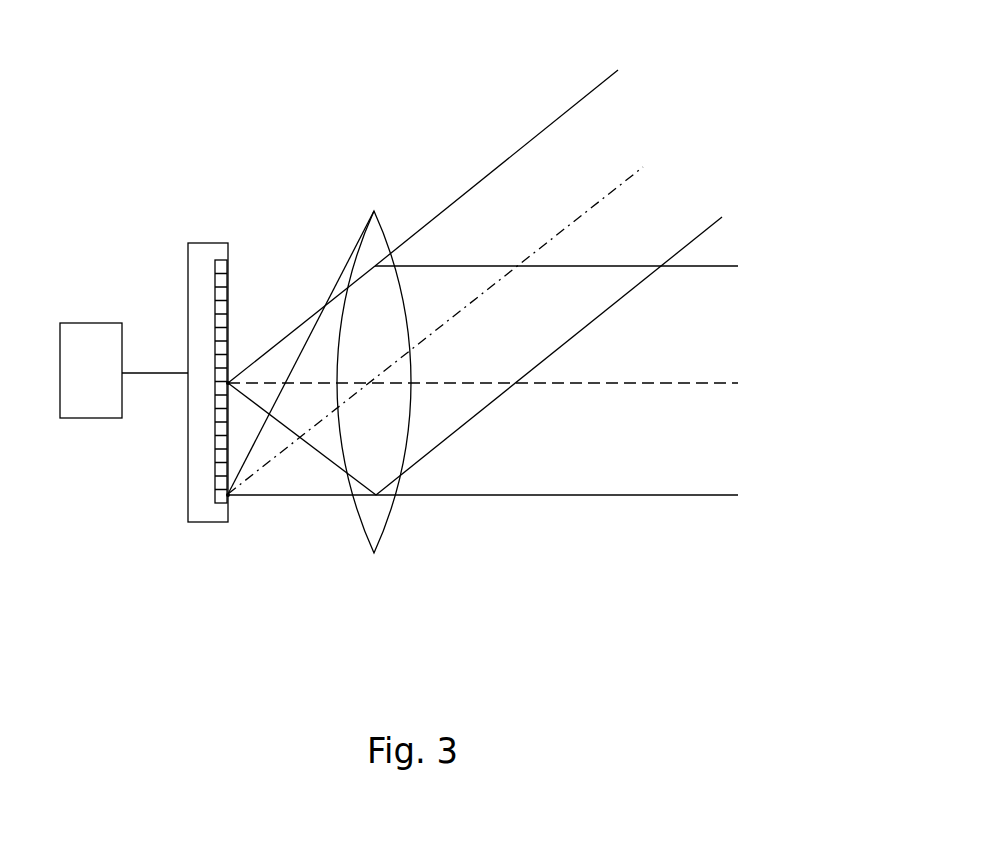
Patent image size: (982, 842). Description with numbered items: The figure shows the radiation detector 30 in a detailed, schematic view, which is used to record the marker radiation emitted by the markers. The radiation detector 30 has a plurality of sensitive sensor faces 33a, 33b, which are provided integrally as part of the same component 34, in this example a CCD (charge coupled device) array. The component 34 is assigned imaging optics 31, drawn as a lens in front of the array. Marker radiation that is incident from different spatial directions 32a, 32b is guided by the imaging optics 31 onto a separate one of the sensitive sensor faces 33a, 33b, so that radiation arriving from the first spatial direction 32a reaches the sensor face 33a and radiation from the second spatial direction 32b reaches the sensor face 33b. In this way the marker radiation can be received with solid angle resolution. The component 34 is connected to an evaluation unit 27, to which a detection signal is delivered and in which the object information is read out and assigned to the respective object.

The evaluation unit 27 is at (97, 348).
The radiation detector 30 is at (154, 189).
The imaging optics 31 is at (378, 512).
The spatial direction 32a is at (657, 338).
The spatial direction 32b is at (612, 239).
The sensitive sensor face 33a is at (237, 399).
The sensitive sensor face 33b is at (236, 514).
The component 34 is at (205, 482).